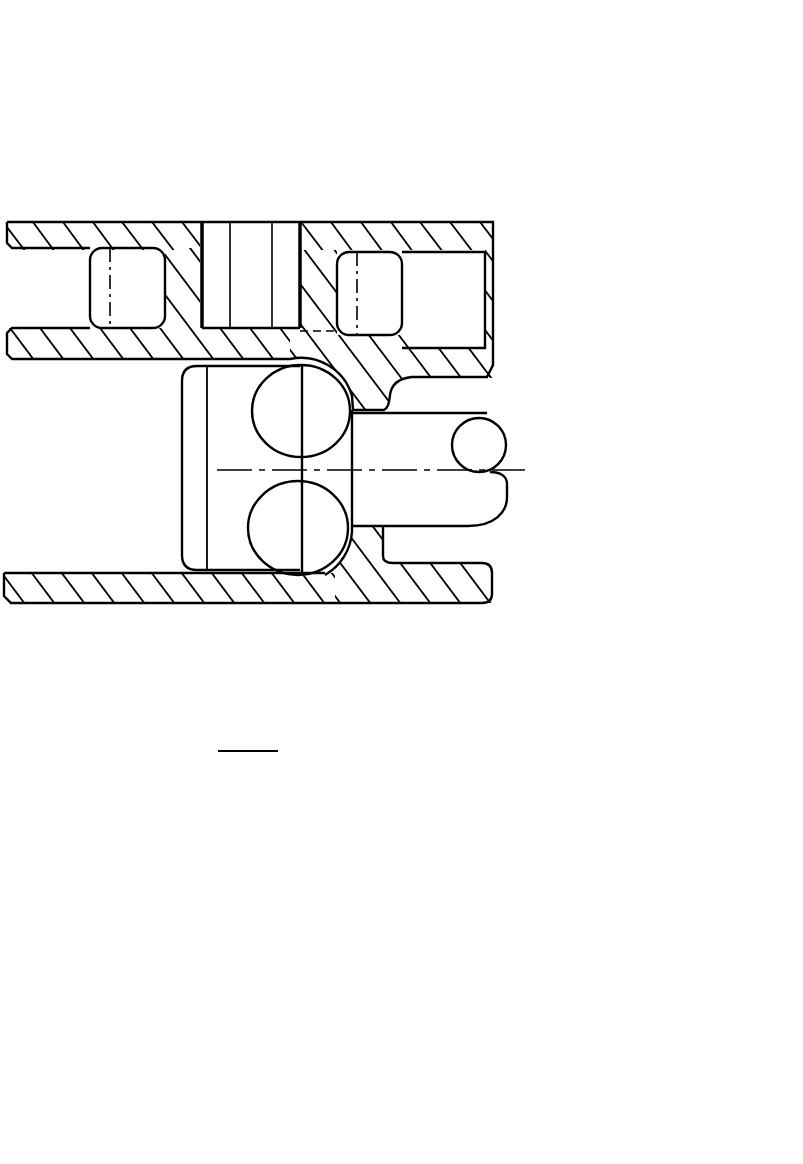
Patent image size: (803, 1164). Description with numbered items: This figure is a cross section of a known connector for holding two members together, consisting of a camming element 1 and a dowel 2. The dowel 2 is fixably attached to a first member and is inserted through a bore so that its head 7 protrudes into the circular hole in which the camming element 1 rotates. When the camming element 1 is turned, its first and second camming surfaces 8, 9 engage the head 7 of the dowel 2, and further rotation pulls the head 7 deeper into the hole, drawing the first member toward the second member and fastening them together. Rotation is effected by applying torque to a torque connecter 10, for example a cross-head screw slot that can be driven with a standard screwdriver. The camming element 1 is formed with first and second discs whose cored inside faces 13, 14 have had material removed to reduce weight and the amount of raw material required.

The camming element 1 is at (100, 135).
The dowel 2 is at (522, 452).
The head 7 is at (237, 553).
The first camming surface 8 is at (344, 578).
The second camming surface 9 is at (342, 386).
The torque connecter 10 is at (252, 234).
The cored inside face 13 is at (437, 553).
The cored inside face 14 is at (437, 390).